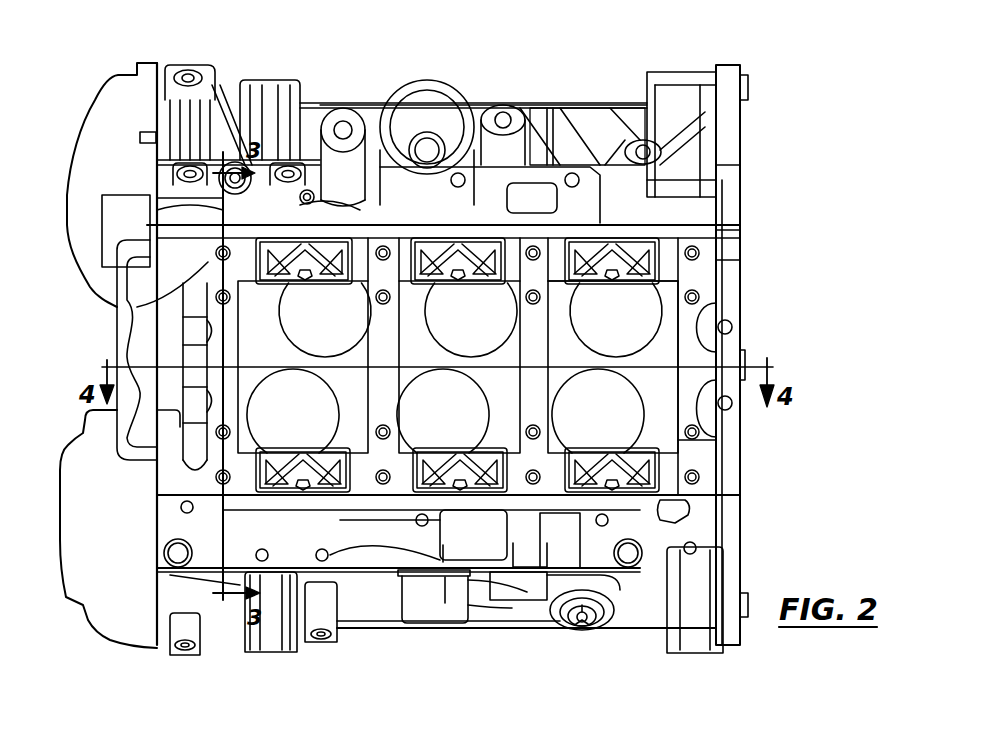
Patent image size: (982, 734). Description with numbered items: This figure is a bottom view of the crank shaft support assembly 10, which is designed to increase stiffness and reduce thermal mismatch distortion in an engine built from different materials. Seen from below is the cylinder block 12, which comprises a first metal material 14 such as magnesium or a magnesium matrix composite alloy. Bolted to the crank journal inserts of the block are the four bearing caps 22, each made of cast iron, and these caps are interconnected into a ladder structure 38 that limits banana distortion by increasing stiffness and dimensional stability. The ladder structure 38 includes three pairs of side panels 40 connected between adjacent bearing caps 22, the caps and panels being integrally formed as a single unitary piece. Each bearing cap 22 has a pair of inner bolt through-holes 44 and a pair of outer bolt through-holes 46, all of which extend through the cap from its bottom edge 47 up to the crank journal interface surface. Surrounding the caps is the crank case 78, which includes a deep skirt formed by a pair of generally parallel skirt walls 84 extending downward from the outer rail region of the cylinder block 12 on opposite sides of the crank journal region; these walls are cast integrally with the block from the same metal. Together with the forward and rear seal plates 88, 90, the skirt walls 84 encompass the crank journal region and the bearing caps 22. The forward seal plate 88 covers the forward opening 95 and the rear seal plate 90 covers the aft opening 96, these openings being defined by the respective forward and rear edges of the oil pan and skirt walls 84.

The crank shaft support assembly 10 is at (752, 238).
The cylinder block 12 is at (366, 102).
The first metal material 14 is at (548, 130).
The bearing caps 22 is at (224, 395).
The ladder structure 38 is at (691, 450).
The side panels 40 is at (295, 262).
The inner bolt through-holes 44 is at (230, 299).
The outer bolt through-holes 46 is at (387, 247).
The bottom edge 47 is at (230, 342).
The crank case 78 is at (665, 362).
The skirt walls 84 is at (585, 212).
The forward seal plate 88 is at (93, 140).
The rear seal plate 90 is at (725, 258).
The forward opening 95 is at (145, 305).
The aft opening 96 is at (740, 172).